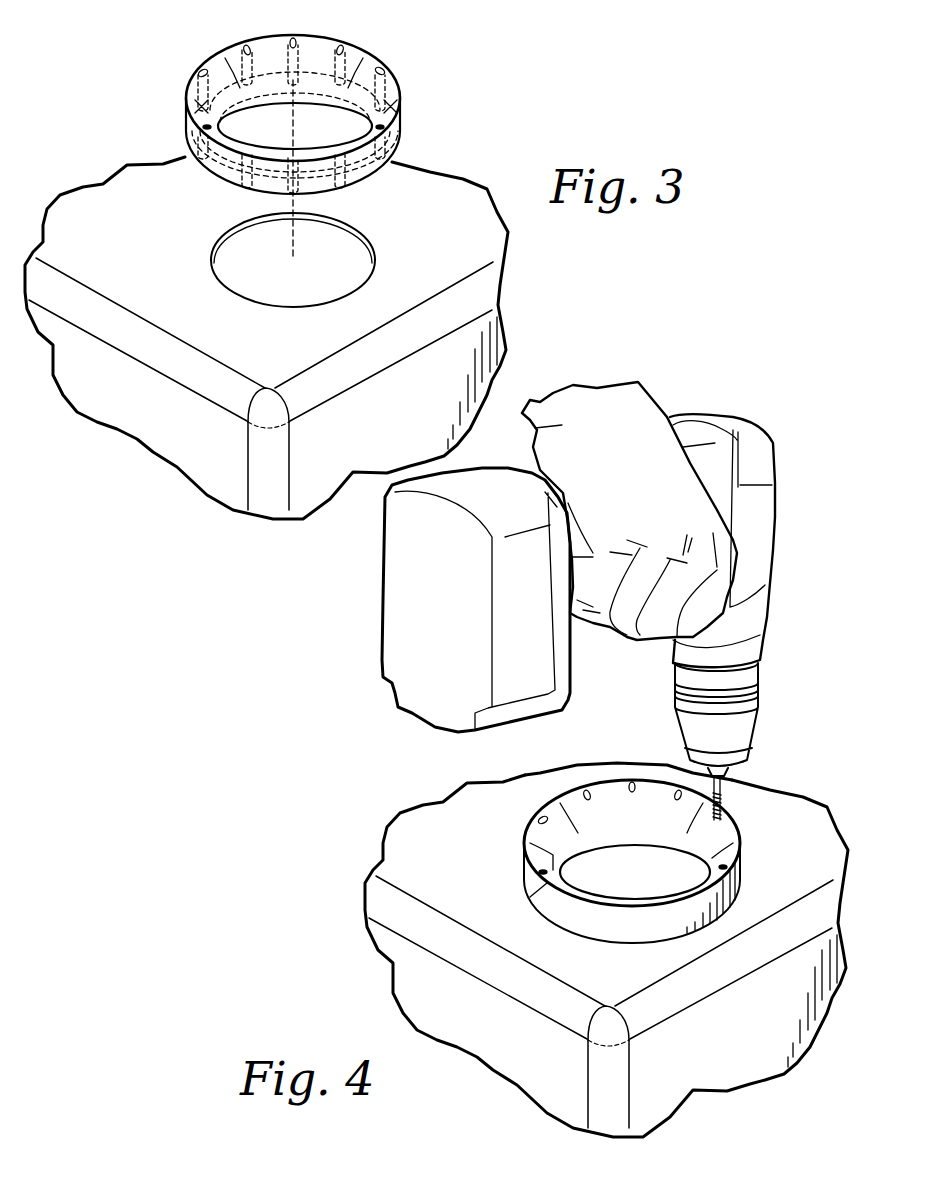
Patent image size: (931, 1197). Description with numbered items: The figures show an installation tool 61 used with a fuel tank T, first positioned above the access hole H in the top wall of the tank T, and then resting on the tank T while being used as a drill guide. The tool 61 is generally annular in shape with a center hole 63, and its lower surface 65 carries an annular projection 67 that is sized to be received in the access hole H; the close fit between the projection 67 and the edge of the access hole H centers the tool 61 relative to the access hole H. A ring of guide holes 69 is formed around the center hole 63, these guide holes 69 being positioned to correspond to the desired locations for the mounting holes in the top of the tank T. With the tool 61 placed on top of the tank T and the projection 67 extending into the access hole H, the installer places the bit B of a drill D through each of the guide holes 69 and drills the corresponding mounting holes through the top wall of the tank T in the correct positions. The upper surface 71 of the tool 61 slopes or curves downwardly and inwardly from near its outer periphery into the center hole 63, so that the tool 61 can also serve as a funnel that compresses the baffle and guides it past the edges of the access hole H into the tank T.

In FIG. 3, the installation tool 61 is at (298, 117).
In FIG. 4, the installation tool 61 is at (641, 829).
In FIG. 3, the center hole 63 is at (262, 108).
In FIG. 3, the lower surface 65 is at (388, 176).
In FIG. 3, the annular projection 67 is at (228, 170).
In FIG. 3, the guide holes 69 is at (190, 80).
In FIG. 4, the guide holes 69 is at (543, 818).
In FIG. 3, the upper surface 71 is at (268, 54).
In FIG. 4, the upper surface 71 is at (607, 803).
In FIG. 3, the tank T is at (100, 226).
In FIG. 4, the tank T is at (437, 848).
In FIG. 3, the access hole H is at (369, 243).
In FIG. 4, the access hole H is at (624, 886).
In FIG. 4, the drill D is at (778, 532).
In FIG. 4, the bit B is at (725, 782).